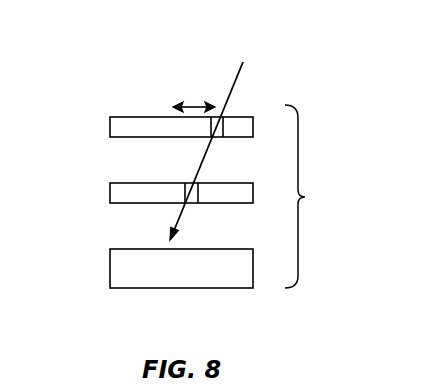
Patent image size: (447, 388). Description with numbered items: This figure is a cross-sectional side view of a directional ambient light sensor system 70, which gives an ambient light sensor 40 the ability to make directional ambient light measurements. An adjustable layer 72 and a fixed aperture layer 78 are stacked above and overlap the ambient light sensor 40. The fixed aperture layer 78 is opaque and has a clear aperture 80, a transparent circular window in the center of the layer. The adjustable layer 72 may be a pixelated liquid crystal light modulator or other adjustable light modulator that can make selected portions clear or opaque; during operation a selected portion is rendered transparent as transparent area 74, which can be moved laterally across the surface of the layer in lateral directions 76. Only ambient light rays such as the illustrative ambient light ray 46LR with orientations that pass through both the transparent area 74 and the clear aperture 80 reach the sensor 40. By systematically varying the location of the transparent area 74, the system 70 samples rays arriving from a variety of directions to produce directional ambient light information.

The ambient light sensor 40 is at (217, 288).
The ambient light ray 46LR is at (240, 78).
The directional ambient light sensor system 70 is at (308, 196).
The adjustable layer 72 is at (110, 127).
The transparent area 74 is at (215, 138).
The lateral directions 76 is at (197, 103).
The fixed aperture layer 78 is at (110, 192).
The clear aperture 80 is at (200, 190).